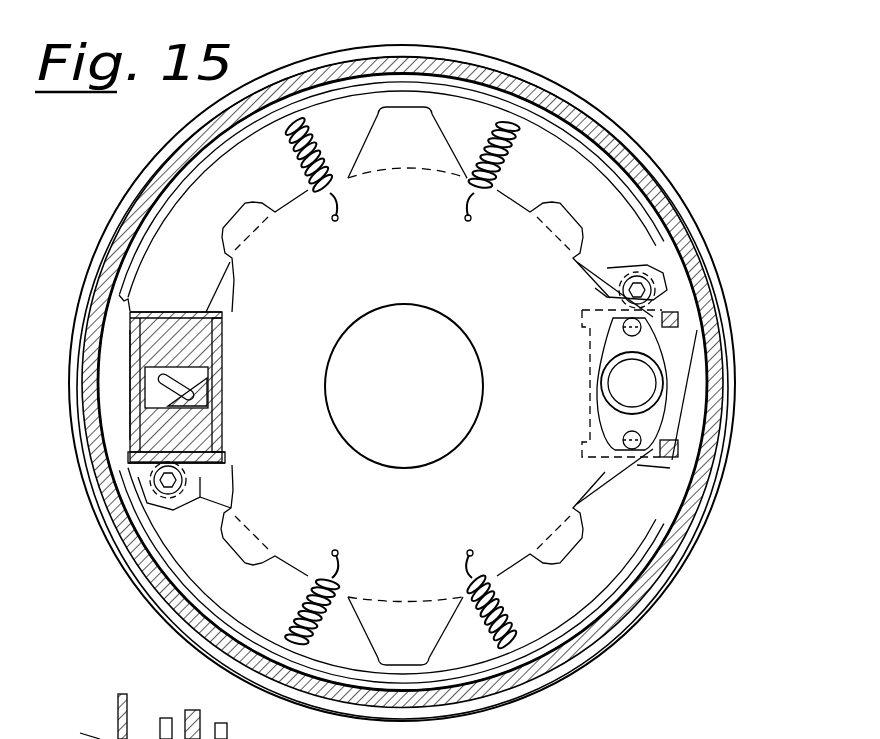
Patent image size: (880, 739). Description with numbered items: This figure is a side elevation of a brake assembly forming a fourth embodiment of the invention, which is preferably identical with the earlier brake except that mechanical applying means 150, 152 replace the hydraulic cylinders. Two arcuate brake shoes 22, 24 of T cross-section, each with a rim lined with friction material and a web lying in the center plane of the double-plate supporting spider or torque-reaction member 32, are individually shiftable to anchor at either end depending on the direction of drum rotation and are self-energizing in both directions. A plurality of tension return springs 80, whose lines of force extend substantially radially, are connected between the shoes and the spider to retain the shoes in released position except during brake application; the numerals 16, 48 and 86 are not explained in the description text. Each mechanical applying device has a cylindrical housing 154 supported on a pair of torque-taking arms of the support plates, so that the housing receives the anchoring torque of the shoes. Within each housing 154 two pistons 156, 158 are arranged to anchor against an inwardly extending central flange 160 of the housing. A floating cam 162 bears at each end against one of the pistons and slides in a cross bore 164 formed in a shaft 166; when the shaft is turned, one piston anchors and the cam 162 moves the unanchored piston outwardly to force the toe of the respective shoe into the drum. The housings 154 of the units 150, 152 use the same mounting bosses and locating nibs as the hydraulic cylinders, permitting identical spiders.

The section line 16 is at (152, 285).
The shoe 22 is at (547, 152).
The shoe 24 is at (565, 597).
The support or torque-reaction member 32 is at (363, 470).
The anchor bracket 48 is at (684, 380).
The tension return springs 80 is at (463, 180).
The return springs 86 is at (484, 124).
The mechanical applying means 150 is at (155, 394).
The mechanical applying means 152 is at (680, 328).
The cylindrical housing 154 is at (130, 435).
The piston 156 is at (150, 330).
The piston 158 is at (217, 465).
The inwardly extending central flange 160 is at (134, 370).
The floating cam 162 is at (190, 395).
The cross bore 164 is at (213, 370).
The shaft 166 is at (218, 330).